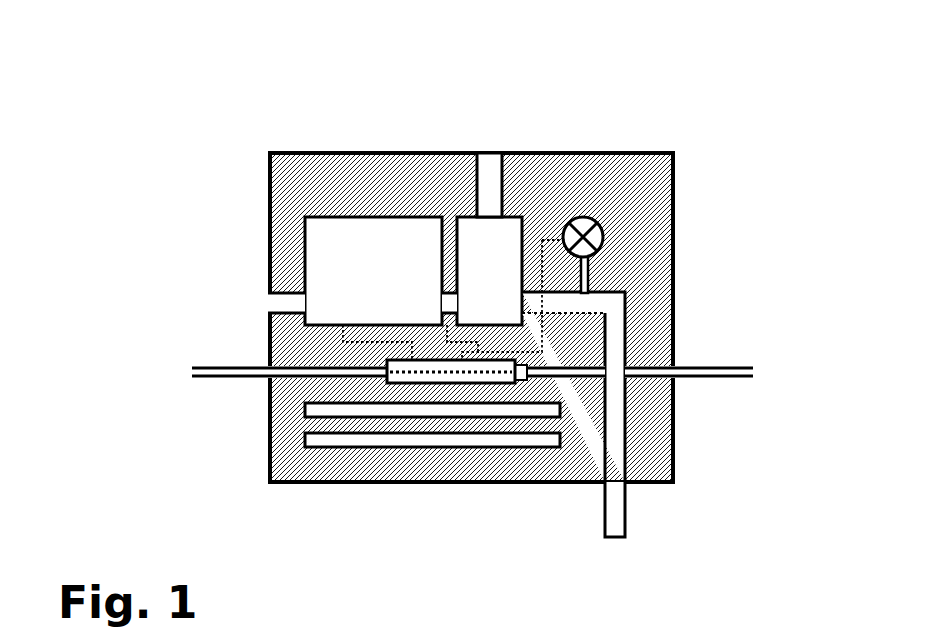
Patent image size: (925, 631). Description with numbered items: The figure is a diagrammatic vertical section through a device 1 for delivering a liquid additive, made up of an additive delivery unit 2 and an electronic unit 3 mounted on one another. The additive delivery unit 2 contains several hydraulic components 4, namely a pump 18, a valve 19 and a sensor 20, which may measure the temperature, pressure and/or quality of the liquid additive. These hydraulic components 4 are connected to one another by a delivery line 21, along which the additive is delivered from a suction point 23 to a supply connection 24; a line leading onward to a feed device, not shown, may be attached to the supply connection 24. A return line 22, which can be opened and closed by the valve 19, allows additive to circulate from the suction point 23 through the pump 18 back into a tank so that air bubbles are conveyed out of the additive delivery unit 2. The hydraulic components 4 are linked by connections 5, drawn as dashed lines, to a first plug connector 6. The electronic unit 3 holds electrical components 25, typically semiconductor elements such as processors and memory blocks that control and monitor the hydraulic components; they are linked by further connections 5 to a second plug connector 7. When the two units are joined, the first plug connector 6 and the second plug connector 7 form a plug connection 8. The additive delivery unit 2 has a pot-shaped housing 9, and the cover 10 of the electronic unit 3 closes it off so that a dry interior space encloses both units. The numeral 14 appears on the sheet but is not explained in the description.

The device 1 is at (480, 315).
The additive delivery unit 2 is at (471, 308).
The electronic unit 3 is at (521, 468).
The hydraulic components 4 is at (304, 218).
The connections 5 is at (345, 344).
The first plug connector 6 is at (268, 366).
The second plug connector 7 is at (268, 382).
The plug connection 8 is at (532, 383).
The pot-shaped housing 9 is at (723, 368).
The cover 10 is at (723, 377).
The sheet 14 is at (794, 621).
The pump 18 is at (318, 213).
The valve 19 is at (453, 214).
The sensor 20 is at (597, 222).
The delivery line 21 is at (627, 290).
The return line 22 is at (504, 162).
The suction point 23 is at (268, 300).
The supply connection 24 is at (615, 538).
The electrical components 25 is at (305, 412).